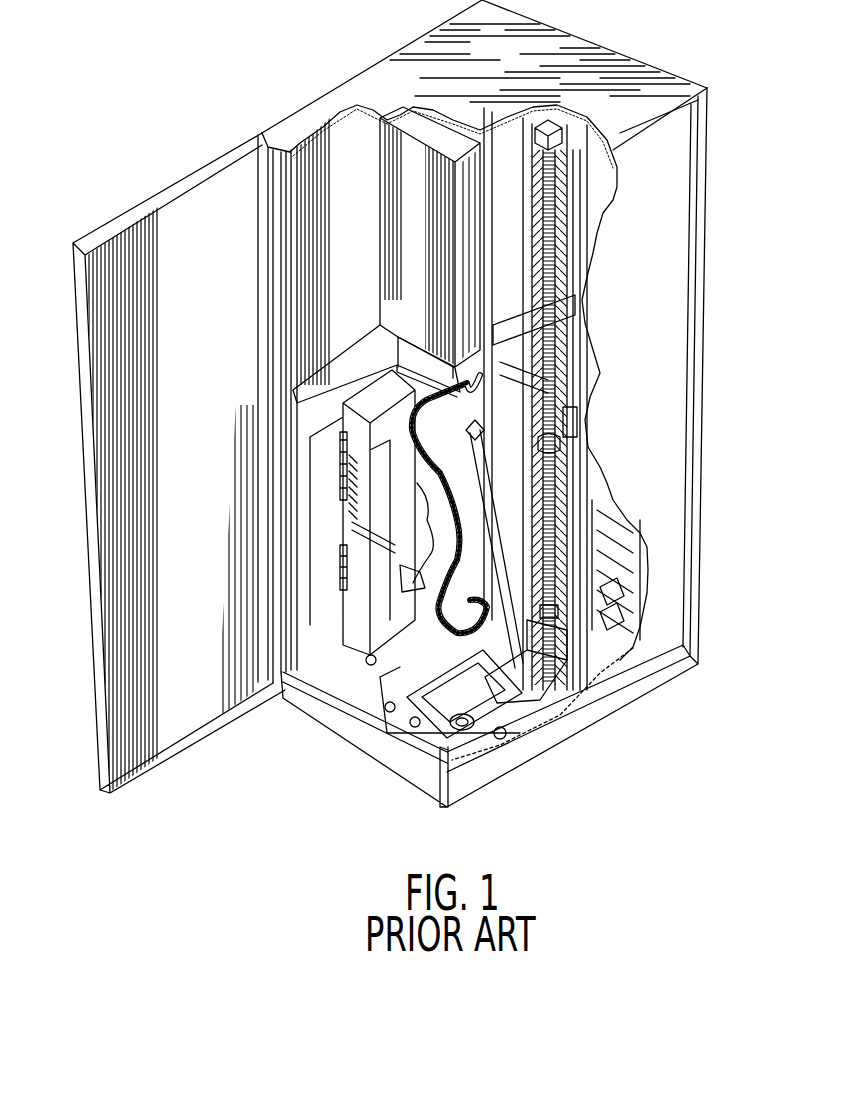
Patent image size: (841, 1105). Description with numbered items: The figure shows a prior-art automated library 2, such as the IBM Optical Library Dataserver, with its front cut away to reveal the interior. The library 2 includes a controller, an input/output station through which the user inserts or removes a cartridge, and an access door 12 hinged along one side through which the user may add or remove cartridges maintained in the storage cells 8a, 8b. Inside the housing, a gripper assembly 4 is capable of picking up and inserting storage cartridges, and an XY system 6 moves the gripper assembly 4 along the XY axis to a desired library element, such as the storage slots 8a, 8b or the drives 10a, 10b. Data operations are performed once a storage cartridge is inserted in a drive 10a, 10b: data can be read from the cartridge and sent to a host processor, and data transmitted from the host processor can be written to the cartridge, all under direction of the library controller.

The automated library 2 is at (186, 128).
The access door 12 is at (147, 263).
The XY system 6 is at (568, 135).
The gripper assembly 4 is at (562, 339).
The storage slot 8a is at (559, 480).
The storage slot 8b is at (619, 552).
The drive 10a is at (561, 577).
The drive 10b is at (625, 608).